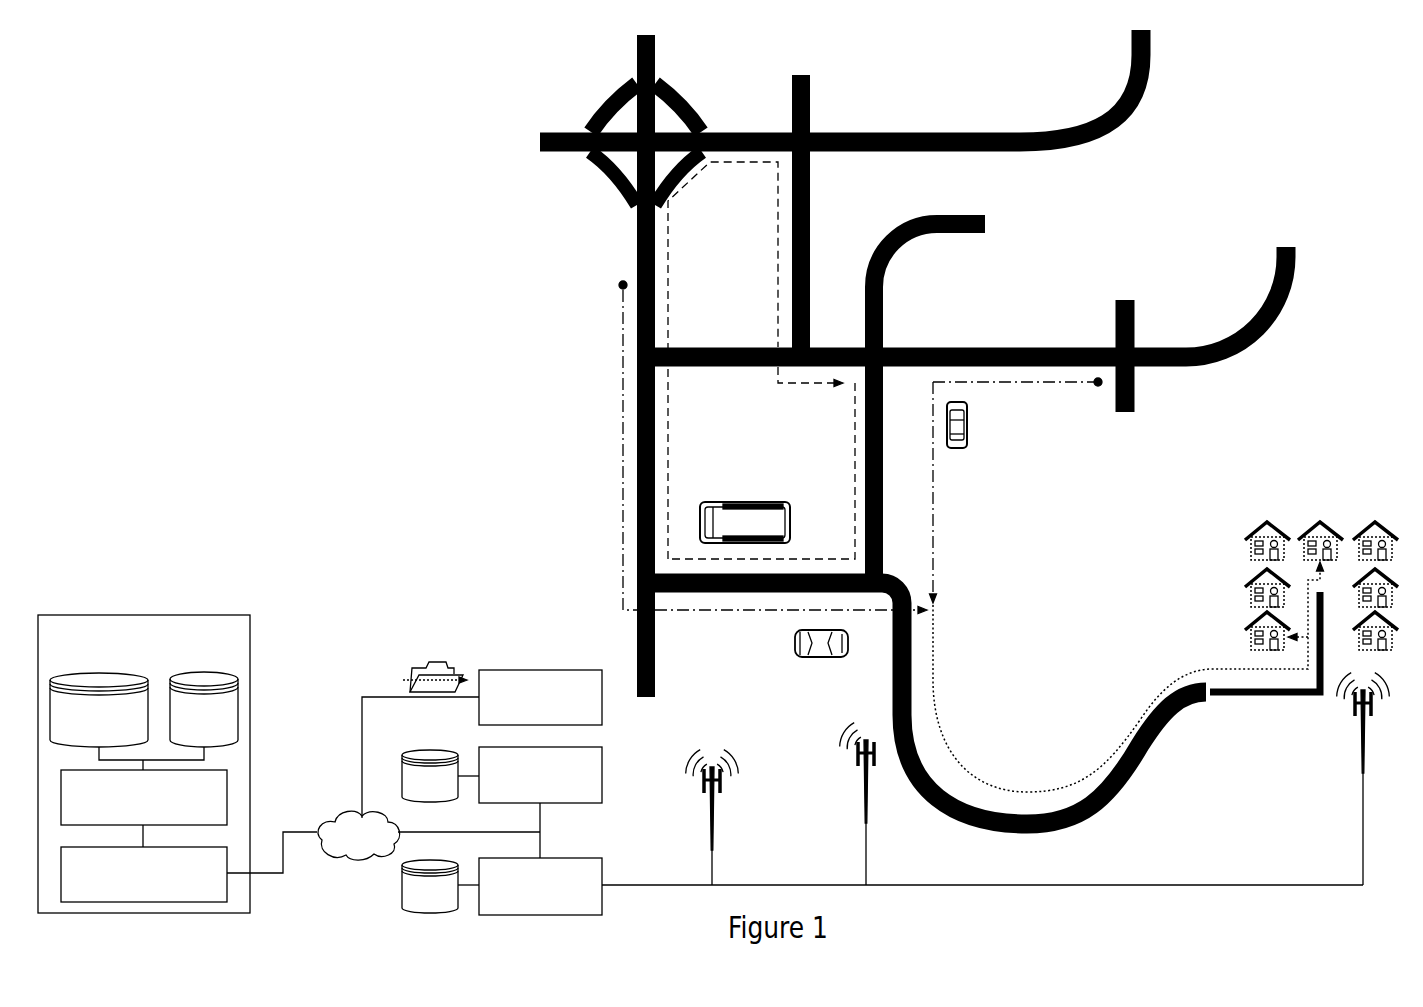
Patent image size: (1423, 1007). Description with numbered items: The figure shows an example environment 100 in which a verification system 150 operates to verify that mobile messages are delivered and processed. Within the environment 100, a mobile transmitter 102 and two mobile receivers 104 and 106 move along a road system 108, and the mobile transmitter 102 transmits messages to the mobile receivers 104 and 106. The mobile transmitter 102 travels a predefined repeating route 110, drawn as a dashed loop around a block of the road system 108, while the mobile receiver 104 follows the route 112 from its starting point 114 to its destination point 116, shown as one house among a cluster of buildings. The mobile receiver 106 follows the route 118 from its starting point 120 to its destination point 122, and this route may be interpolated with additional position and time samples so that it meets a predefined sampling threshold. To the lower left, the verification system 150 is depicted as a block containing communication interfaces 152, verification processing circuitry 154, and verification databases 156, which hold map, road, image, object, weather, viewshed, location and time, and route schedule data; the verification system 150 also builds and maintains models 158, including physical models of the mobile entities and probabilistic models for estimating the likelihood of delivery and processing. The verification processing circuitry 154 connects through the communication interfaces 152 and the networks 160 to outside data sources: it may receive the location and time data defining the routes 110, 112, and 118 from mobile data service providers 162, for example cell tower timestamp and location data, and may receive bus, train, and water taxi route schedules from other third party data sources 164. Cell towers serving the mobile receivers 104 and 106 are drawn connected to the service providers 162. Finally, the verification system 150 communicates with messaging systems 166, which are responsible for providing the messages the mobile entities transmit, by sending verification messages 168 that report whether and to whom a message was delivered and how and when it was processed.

The environment 100 is at (476, 94).
The mobile transmitter 102 is at (782, 520).
The mobile receiver 104 is at (968, 433).
The mobile receiver 106 is at (794, 642).
The road system 108 is at (598, 83).
The predefined repeating route 110 is at (670, 407).
The route 112 is at (934, 532).
The starting point 114 is at (1097, 387).
The destination point 116 is at (1250, 633).
The route 118 is at (622, 462).
The starting point 120 is at (619, 289).
The destination point 122 is at (1332, 523).
The verification system 150 is at (235, 641).
The communication interfaces 152 is at (213, 896).
The verification processing circuitry 154 is at (213, 796).
The verification databases 156 is at (99, 671).
The models 158 is at (214, 671).
The networks 160 is at (357, 858).
The mobile data service providers 162 is at (592, 883).
The third party data sources 164 is at (592, 795).
The messaging systems 166 is at (587, 720).
The verification messages 168 is at (428, 658).